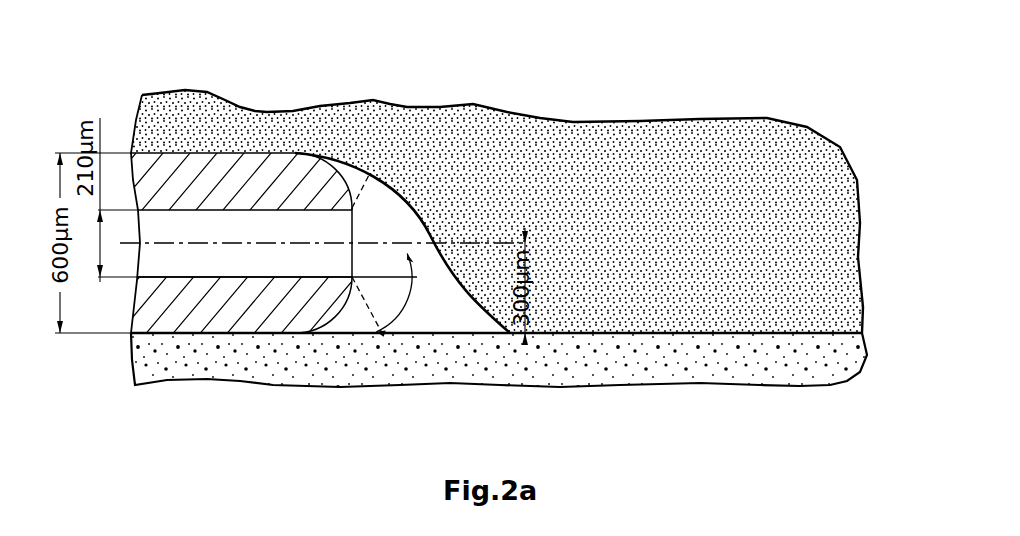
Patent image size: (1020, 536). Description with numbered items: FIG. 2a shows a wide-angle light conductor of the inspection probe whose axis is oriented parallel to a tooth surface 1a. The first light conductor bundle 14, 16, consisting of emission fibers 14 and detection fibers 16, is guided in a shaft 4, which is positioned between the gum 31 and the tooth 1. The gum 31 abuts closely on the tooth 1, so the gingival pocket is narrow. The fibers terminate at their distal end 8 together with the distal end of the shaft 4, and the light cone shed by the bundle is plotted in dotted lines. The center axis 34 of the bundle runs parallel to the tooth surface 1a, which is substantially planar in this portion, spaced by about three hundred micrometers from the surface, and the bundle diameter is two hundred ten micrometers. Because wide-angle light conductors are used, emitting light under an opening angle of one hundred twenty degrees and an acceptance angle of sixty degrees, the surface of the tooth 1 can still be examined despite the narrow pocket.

The tooth 1 is at (499, 382).
The tooth surface 1a is at (591, 333).
The shaft 4 is at (170, 173).
The distal end 8 is at (365, 228).
The emission fibers 14 is at (206, 293).
The detection fibers 16 is at (165, 256).
The gum 31 is at (400, 147).
The center axis 34 is at (283, 243).